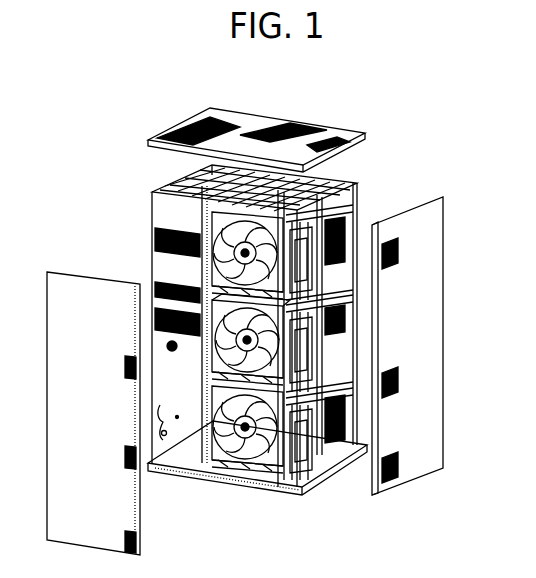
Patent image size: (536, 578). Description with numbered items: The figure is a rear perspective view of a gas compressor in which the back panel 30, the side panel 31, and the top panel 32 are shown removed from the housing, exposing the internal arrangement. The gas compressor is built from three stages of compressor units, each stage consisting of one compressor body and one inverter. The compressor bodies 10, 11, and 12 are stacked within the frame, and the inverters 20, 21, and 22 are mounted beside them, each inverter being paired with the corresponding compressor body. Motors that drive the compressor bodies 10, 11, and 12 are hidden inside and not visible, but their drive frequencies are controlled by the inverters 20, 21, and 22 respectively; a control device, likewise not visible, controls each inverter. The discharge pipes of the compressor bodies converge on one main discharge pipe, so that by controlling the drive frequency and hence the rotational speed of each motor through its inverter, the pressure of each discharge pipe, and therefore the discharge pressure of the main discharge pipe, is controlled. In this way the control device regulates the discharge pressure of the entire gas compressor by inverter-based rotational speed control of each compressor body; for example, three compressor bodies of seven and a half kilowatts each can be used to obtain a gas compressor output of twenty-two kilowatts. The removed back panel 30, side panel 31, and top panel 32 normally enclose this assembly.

The compressor body 10 is at (215, 237).
The compressor body 11 is at (177, 377).
The compressor body 12 is at (168, 530).
The inverter 20 is at (403, 172).
The inverter 21 is at (407, 360).
The inverter 22 is at (392, 535).
The back panel 30 is at (90, 288).
The side panel 31 is at (475, 228).
The top panel 32 is at (382, 104).